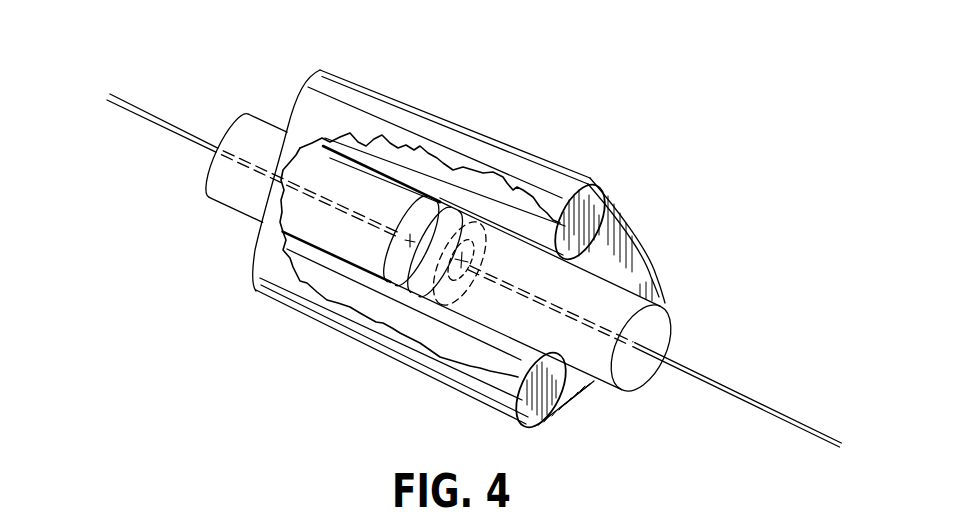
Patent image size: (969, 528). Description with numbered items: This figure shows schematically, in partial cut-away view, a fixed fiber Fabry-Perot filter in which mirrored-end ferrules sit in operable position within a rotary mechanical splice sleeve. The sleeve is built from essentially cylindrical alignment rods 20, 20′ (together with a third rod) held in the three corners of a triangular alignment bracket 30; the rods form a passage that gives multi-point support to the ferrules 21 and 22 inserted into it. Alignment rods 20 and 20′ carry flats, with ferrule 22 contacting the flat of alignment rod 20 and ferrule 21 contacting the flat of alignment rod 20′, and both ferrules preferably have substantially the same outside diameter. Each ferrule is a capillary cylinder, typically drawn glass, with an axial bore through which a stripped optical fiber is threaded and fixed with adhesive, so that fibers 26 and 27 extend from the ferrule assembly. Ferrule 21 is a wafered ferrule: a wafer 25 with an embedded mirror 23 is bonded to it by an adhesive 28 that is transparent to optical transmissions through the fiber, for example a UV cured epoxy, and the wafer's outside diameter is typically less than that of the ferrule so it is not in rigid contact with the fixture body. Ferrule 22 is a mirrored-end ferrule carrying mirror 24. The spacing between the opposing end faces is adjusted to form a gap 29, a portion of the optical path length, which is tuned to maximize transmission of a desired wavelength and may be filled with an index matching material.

The alignment rod 20 is at (653, 273).
The alignment rod 20′ is at (532, 427).
The ferrule 21 is at (218, 197).
The ferrule 22 is at (655, 335).
The mirror 23 is at (406, 252).
The mirror 24 is at (478, 257).
The wafer 25 is at (396, 280).
The fiber 26 is at (140, 107).
The fiber 27 is at (763, 401).
The adhesive 28 is at (386, 249).
The gap 29 is at (424, 282).
The alignment bracket 30 is at (352, 98).